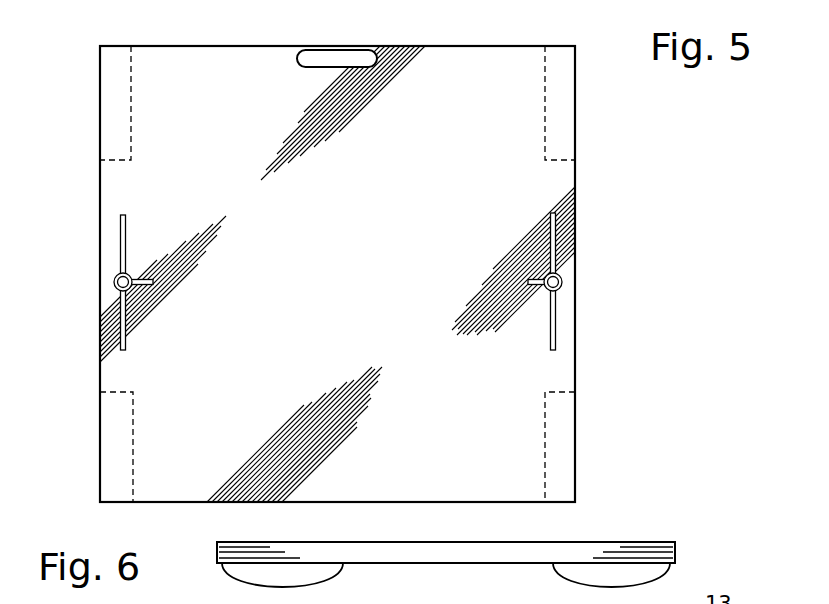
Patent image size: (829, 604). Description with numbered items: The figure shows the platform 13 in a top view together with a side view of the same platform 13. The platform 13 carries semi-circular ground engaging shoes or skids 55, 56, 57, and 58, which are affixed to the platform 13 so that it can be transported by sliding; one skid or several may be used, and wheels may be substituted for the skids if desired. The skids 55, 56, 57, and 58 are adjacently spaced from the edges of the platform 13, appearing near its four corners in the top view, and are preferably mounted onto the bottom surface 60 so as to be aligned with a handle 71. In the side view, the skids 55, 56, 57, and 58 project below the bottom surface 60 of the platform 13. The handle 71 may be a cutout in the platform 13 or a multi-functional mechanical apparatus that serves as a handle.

In FIG. 5, the platform 13 is at (493, 46).
In FIG. 6, the platform 13 is at (612, 542).
In FIG. 5, the bottom surface 60 is at (364, 300).
In FIG. 5, the handle 71 is at (352, 60).
In FIG. 5, the ground engaging shoe or skid 57 is at (110, 102).
In FIG. 5, the ground engaging shoe or skid 55 is at (568, 101).
In FIG. 5, the ground engaging shoe or skid 58 is at (113, 450).
In FIG. 5, the ground engaging shoe or skid 56 is at (562, 445).